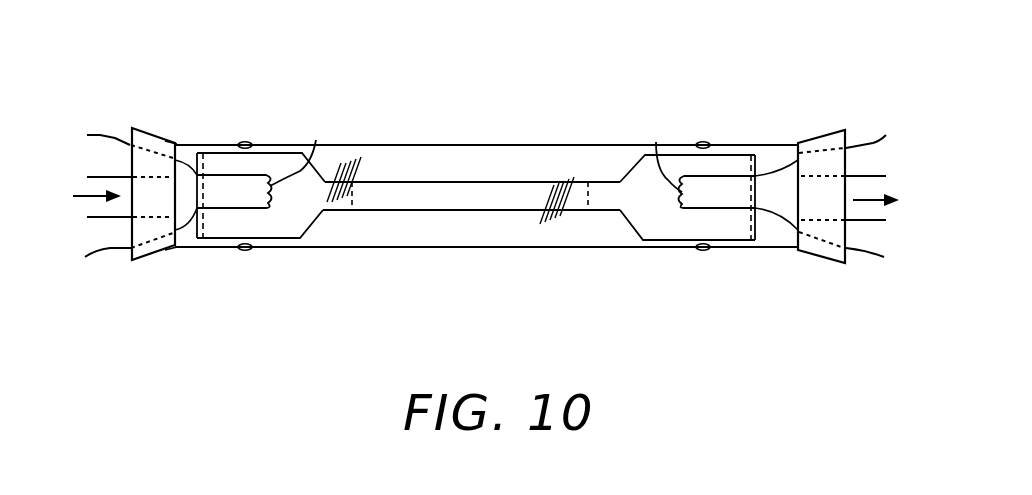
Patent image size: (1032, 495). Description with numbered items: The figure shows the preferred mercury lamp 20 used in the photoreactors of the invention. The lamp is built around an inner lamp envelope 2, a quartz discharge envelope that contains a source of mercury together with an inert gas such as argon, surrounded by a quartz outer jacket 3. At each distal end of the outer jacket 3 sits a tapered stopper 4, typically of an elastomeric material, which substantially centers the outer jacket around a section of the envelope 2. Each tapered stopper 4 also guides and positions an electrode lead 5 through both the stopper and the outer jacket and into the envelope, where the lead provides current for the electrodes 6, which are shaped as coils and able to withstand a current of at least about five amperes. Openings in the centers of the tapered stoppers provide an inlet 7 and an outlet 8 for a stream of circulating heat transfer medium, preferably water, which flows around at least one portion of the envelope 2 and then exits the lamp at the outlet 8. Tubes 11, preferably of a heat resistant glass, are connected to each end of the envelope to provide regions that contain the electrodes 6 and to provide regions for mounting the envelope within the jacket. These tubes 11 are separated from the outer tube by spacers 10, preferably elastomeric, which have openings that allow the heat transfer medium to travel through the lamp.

The inner lamp envelope 2 is at (397, 211).
The outer jacket 3 is at (488, 248).
The tapered stopper 4 is at (152, 253).
The electrode lead 5 is at (101, 133).
The electrodes 6 is at (316, 140).
The inlet 7 is at (89, 196).
The outlet 8 is at (885, 201).
The spacers 10 is at (245, 141).
The tubes 11 is at (275, 243).
The mercury lamp 20 is at (763, 91).